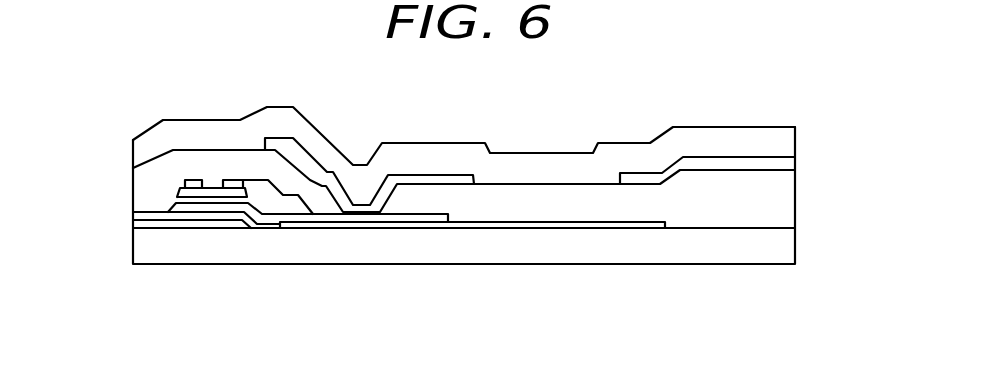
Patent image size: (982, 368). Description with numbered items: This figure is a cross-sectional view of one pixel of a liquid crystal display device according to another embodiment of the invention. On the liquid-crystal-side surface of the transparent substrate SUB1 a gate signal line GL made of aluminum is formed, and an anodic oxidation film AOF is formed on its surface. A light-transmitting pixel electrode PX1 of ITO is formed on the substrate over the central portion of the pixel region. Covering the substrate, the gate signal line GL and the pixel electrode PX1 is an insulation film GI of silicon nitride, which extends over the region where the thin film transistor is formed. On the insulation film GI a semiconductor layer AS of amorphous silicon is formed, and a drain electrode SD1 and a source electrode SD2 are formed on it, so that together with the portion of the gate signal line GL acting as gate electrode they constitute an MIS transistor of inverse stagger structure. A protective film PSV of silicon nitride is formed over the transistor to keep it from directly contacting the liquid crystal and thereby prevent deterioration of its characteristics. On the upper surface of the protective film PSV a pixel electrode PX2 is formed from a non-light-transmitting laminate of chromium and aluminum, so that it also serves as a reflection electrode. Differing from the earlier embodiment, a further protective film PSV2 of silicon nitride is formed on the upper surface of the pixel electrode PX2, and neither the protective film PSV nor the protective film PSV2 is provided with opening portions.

The transparent substrate SUB1 is at (680, 260).
The gate signal line GL is at (197, 224).
The anodic oxidation film AOF is at (165, 208).
The insulation film GI is at (176, 200).
The semiconductor layer AS is at (210, 190).
The drain electrode SD1 is at (193, 180).
The source electrode SD2 is at (250, 185).
The pixel electrode PX1 is at (543, 227).
The protective film PSV is at (170, 170).
The pixel electrode PX2 is at (293, 150).
The protective film PSV2 is at (452, 153).